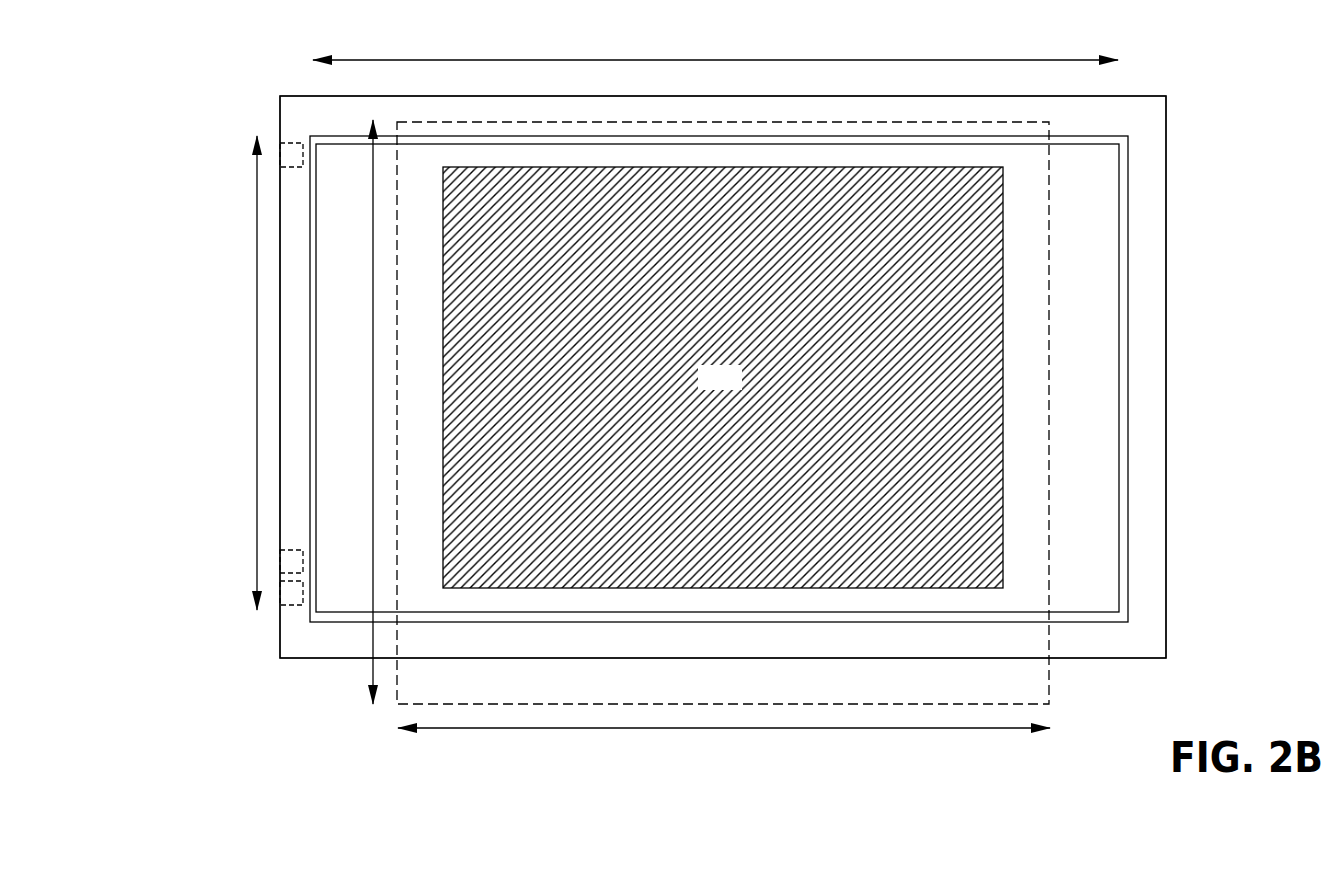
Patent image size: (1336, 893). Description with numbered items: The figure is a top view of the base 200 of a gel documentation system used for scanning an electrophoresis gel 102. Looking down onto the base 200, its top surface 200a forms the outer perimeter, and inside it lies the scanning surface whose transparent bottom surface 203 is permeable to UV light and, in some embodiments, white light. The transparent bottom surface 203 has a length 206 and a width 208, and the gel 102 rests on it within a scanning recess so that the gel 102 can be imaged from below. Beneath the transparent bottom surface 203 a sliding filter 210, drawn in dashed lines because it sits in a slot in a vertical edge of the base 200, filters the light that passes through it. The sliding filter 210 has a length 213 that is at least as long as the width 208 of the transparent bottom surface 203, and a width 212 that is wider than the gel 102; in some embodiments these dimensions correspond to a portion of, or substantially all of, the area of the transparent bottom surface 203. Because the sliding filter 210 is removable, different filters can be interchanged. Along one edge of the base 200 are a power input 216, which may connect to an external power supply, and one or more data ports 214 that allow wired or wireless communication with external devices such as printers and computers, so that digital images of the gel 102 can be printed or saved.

The electrophoresis gel 102 is at (723, 377).
The base 200 is at (242, 715).
The top surface 200a is at (1138, 522).
The transparent bottom surface 203 is at (1094, 197).
The length 206 is at (577, 59).
The width 208 is at (256, 300).
The sliding filter 210 is at (1015, 671).
The width 212 is at (592, 725).
The length 213 is at (372, 305).
The data ports 214 is at (293, 562).
The power input 216 is at (290, 157).